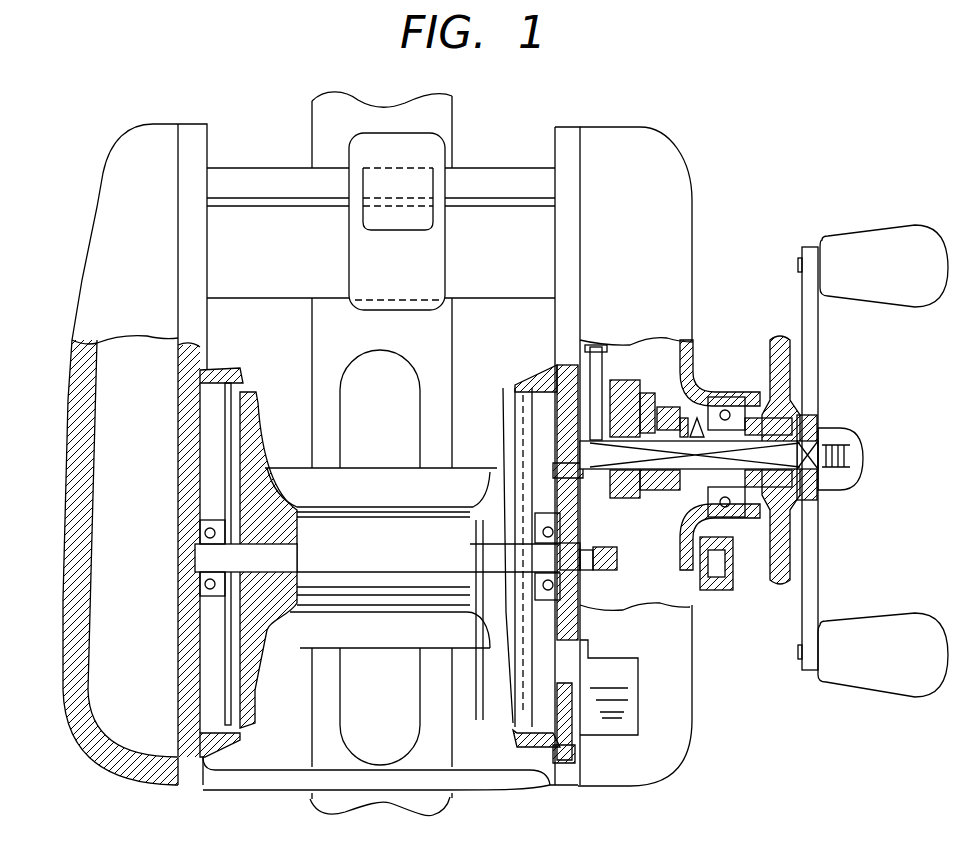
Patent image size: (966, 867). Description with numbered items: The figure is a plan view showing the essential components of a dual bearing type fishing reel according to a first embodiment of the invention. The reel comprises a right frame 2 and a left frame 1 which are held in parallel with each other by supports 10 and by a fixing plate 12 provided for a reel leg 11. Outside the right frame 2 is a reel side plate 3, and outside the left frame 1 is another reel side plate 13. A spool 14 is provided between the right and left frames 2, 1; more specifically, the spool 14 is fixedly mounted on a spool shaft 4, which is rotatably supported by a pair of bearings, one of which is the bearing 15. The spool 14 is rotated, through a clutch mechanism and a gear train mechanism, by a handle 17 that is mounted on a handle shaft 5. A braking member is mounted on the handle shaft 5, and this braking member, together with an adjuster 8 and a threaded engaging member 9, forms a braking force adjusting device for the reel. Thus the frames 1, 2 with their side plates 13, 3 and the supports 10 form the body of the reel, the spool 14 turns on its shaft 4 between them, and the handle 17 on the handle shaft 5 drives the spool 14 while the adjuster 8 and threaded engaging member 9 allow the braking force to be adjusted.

The left frame 1 is at (176, 166).
The right frame 2 is at (588, 152).
The reel side plate 3 is at (686, 168).
The spool shaft 4 is at (213, 562).
The handle shaft 5 is at (858, 456).
The adjuster 8 is at (783, 330).
The threaded engaging member 9 is at (767, 500).
The support 10 is at (230, 793).
The reel leg 11 is at (418, 372).
The fixing plate 12 is at (468, 467).
The reel side plate 13 is at (95, 208).
The spool 14 is at (312, 522).
The bearing 15 is at (204, 532).
The handle 17 is at (815, 587).